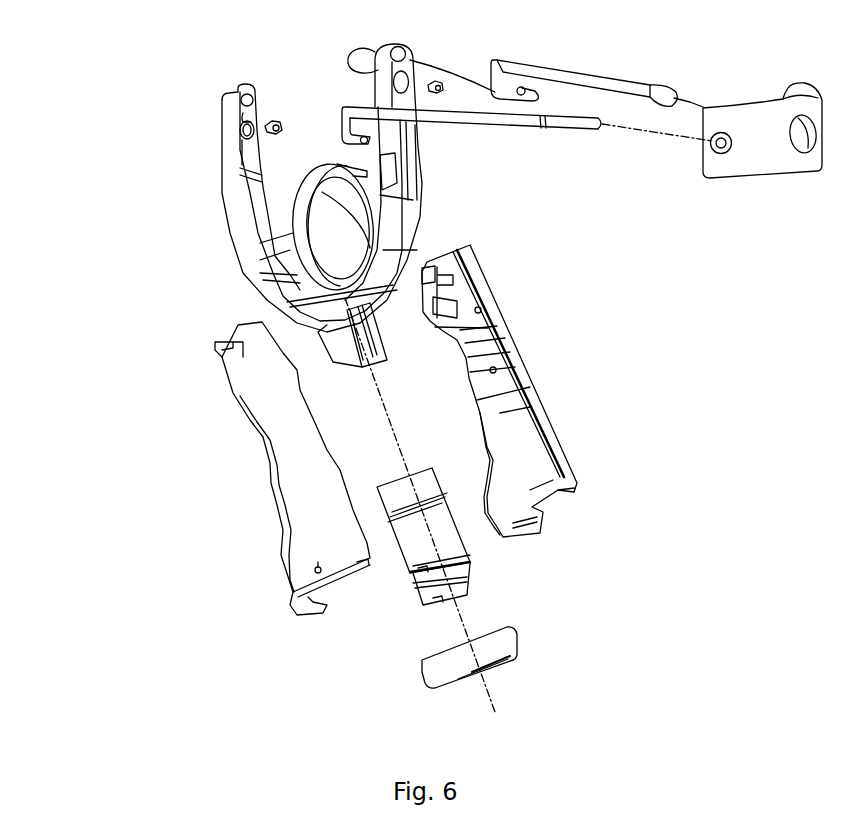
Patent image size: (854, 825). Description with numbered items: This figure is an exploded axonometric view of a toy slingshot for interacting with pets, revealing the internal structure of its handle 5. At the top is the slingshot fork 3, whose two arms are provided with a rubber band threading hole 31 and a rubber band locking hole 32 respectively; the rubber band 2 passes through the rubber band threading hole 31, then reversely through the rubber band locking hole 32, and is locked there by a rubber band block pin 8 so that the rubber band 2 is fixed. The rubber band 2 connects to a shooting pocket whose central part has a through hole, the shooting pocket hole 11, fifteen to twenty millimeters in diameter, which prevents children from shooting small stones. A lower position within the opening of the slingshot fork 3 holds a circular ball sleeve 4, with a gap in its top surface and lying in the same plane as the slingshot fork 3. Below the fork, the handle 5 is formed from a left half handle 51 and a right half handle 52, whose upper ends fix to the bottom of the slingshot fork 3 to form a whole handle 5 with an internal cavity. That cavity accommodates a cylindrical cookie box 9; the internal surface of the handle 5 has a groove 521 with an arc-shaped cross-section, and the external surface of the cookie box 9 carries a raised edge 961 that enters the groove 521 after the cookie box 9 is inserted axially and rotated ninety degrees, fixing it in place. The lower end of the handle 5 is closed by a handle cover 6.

The rubber band 2 is at (458, 125).
The slingshot fork 3 is at (230, 178).
The rubber band threading hole 31 is at (243, 118).
The rubber band locking hole 32 is at (240, 130).
The ball sleeve 4 is at (312, 180).
The handle 5 is at (88, 392).
The left half handle 51 is at (252, 370).
The right half handle 52 is at (478, 397).
The groove 521 is at (528, 493).
The handle cover 6 is at (445, 673).
The rubber band block pin 8 is at (279, 124).
The cookie box 9 is at (410, 547).
The raised edge 961 is at (447, 568).
The shooting pocket hole 11 is at (805, 137).